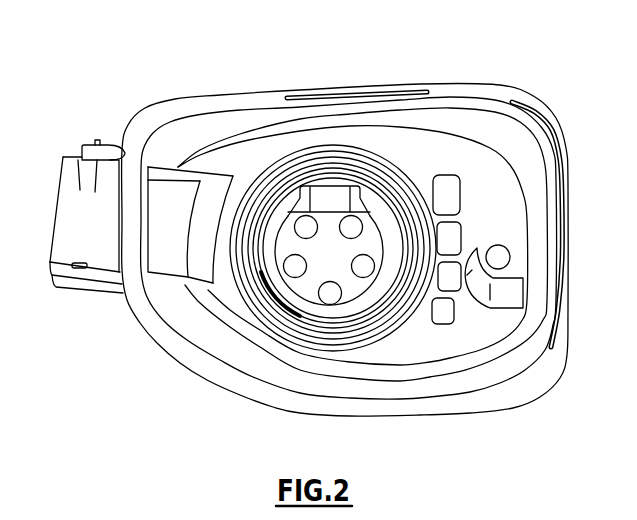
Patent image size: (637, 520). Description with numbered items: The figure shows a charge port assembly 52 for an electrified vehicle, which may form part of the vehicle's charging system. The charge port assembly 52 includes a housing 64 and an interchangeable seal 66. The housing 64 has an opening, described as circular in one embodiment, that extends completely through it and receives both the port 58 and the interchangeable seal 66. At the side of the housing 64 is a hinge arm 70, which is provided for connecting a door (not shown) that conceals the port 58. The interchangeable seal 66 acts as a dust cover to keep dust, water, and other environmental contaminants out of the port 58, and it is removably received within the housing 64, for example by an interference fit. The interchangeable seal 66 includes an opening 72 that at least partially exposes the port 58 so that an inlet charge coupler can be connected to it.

The charge port assembly 52 is at (536, 73).
The port 58 is at (303, 291).
The housing 64 is at (416, 126).
The interchangeable seal 66 is at (404, 334).
The hinge arm 70 is at (92, 171).
The opening 72 is at (364, 292).